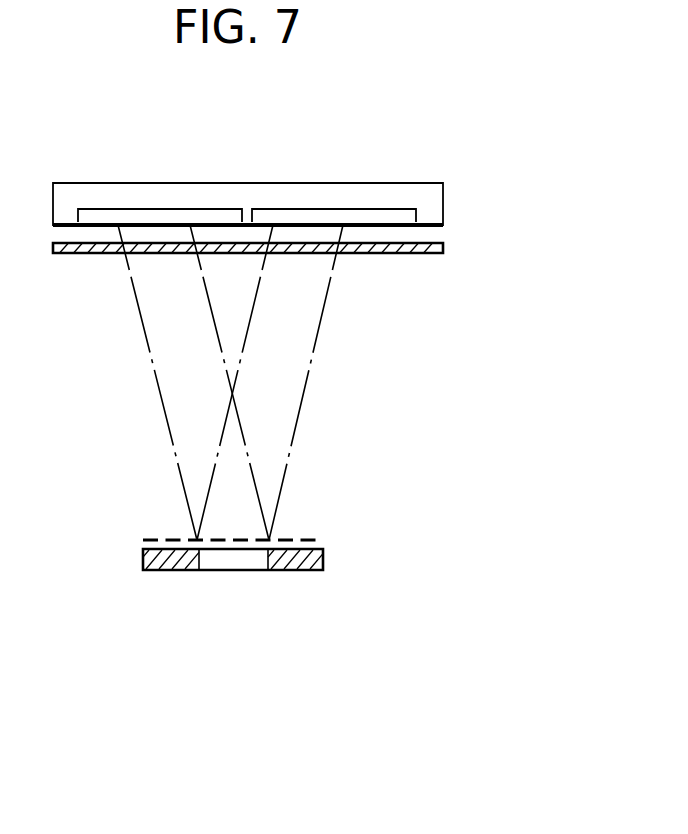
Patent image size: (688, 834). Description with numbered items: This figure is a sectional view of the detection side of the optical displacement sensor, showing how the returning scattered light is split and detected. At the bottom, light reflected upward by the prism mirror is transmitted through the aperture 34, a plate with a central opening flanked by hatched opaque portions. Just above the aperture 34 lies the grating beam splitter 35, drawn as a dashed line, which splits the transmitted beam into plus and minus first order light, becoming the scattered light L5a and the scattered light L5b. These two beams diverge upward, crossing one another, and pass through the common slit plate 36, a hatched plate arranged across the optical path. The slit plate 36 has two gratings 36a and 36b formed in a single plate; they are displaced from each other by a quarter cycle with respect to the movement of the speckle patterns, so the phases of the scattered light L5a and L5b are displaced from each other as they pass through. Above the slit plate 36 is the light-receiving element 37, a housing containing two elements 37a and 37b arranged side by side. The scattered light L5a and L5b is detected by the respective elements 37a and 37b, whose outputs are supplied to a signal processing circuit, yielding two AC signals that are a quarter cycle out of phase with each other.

The light-receiving element 37 is at (423, 190).
The element 37a is at (160, 216).
The element 37b is at (331, 216).
The slit plate 36 is at (443, 248).
The grating 36a is at (158, 254).
The grating 36b is at (300, 254).
The scattered light L5a is at (170, 428).
The scattered light L5b is at (296, 428).
The grating beam splitter 35 is at (322, 540).
The aperture 34 is at (323, 560).